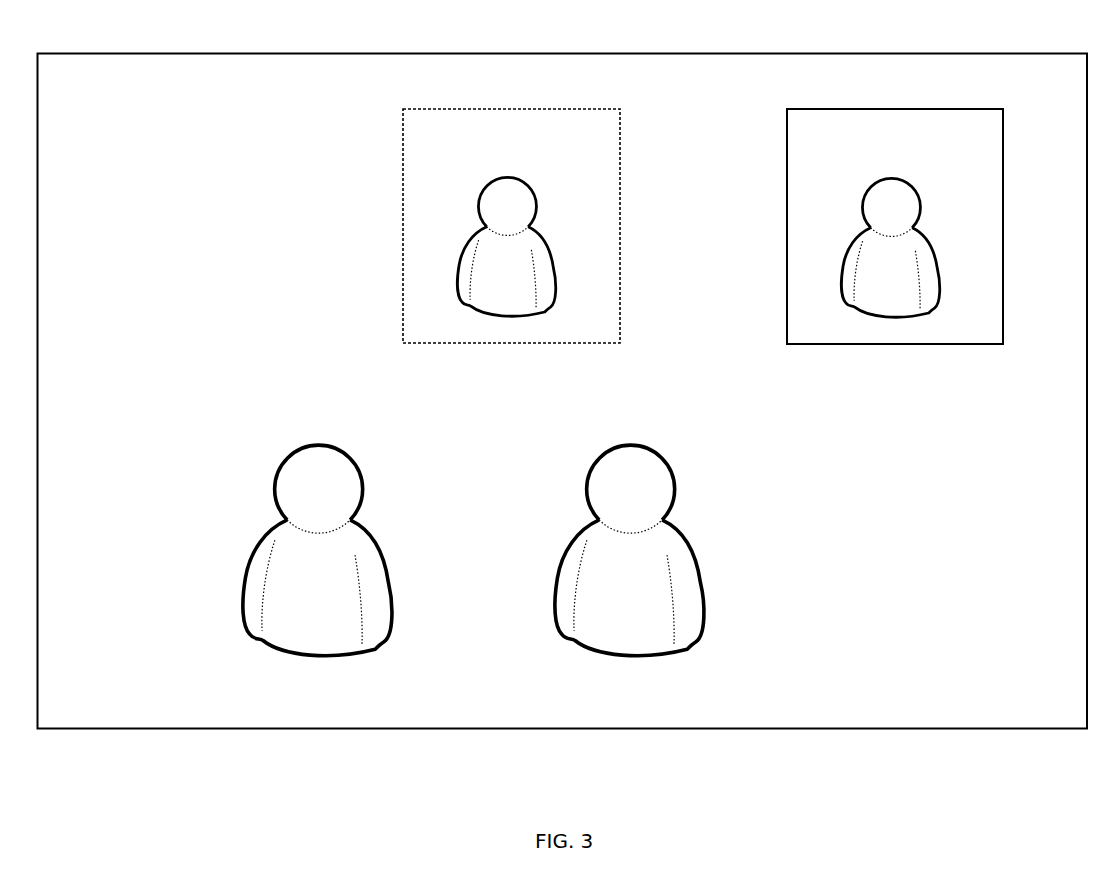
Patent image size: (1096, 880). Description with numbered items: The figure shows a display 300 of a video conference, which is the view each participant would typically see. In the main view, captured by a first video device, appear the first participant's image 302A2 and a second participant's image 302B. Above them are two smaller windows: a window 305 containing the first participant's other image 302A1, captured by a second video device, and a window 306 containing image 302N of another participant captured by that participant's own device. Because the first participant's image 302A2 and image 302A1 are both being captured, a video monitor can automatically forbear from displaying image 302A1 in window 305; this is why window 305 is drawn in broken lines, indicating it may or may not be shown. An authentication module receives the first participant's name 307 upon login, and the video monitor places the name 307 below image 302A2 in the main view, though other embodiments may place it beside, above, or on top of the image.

The display 300 is at (571, 53).
The window 305 is at (498, 109).
The window 306 is at (883, 109).
The participant's image 302A1 is at (505, 177).
The participant's image 302N is at (892, 178).
The participant's image 302A2 is at (318, 445).
The participant's image 302B is at (630, 445).
The name 307 is at (320, 683).